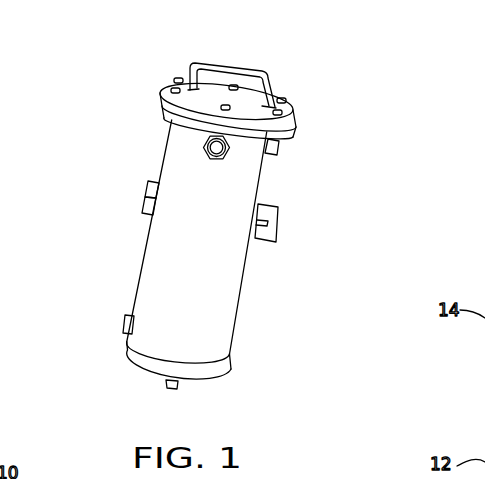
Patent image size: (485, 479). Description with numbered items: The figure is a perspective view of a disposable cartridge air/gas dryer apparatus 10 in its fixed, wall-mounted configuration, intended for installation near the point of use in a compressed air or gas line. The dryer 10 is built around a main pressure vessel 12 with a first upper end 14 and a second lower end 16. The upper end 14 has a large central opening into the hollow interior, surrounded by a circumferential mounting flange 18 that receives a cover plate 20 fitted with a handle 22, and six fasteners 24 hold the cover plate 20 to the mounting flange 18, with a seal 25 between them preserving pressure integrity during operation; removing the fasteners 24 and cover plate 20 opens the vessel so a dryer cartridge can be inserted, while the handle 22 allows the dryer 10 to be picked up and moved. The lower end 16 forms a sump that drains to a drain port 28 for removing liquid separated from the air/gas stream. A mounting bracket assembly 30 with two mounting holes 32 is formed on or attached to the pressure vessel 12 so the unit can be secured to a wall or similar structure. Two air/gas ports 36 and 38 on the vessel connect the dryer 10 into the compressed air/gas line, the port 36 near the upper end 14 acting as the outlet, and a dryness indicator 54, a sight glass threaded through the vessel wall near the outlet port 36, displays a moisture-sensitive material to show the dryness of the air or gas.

The disposable cartridge air/gas dryer apparatus 10 is at (434, 130).
The main pressure vessel 12 is at (124, 238).
The first (upper) end 14 is at (313, 118).
The second (lower) end 16 is at (250, 372).
The circumferential mounting flange 18 is at (159, 113).
The cover plate 20 is at (174, 83).
The handle 22 is at (246, 62).
The fasteners 24 is at (285, 98).
The seal 25 is at (297, 130).
The drain port 28 is at (183, 392).
The mounting bracket assembly 30 is at (278, 216).
The mounting holes 32 is at (146, 186).
The air/gas port 36 is at (279, 153).
The air/gas port 38 is at (123, 326).
The dryness indicator 54 is at (221, 160).